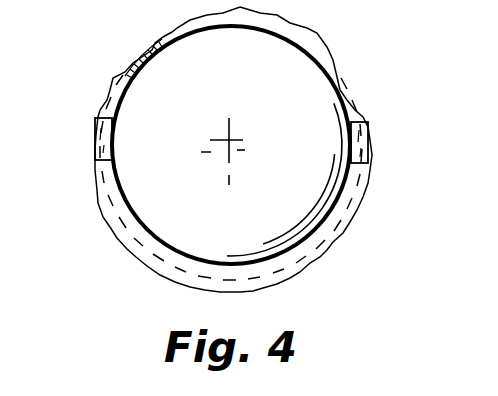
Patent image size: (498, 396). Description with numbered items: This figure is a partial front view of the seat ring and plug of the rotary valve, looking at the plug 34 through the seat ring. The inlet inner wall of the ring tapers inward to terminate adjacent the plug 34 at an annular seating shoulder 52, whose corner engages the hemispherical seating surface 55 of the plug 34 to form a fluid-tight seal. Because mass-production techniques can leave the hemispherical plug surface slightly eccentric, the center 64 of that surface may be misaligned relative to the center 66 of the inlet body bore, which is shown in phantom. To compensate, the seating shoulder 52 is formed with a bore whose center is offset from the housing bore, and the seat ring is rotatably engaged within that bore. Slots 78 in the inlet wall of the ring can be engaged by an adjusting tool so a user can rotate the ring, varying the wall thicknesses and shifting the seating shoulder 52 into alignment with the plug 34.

The plug 34 is at (308, 82).
The seating shoulder 52 is at (321, 229).
The hemispherical seating surface 55 is at (192, 196).
The center 64 is at (231, 137).
The center 66 is at (245, 151).
The slots 78 is at (94, 135).